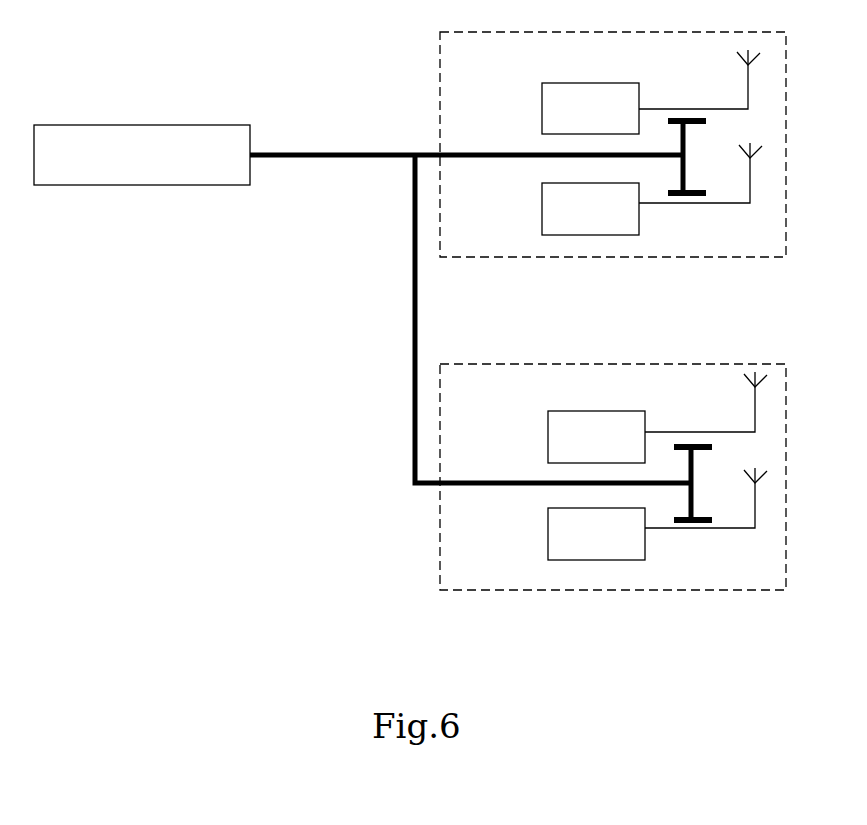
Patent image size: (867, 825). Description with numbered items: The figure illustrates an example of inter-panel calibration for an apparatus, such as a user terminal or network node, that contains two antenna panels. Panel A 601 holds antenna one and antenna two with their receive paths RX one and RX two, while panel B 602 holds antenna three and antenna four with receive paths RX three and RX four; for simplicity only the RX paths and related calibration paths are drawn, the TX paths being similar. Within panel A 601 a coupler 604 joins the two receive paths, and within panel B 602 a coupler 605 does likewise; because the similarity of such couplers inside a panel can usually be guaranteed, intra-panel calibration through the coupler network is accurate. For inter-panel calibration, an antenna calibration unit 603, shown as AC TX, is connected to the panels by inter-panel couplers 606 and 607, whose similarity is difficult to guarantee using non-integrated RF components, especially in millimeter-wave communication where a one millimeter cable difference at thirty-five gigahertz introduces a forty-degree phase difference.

The panel A 601 is at (515, 80).
The panel B 602 is at (515, 410).
The antenna calibration unit 603 is at (104, 172).
The coupler 604 is at (735, 170).
The coupler 605 is at (742, 497).
The inter-panel coupler 606 is at (428, 145).
The inter-panel coupler 607 is at (403, 335).